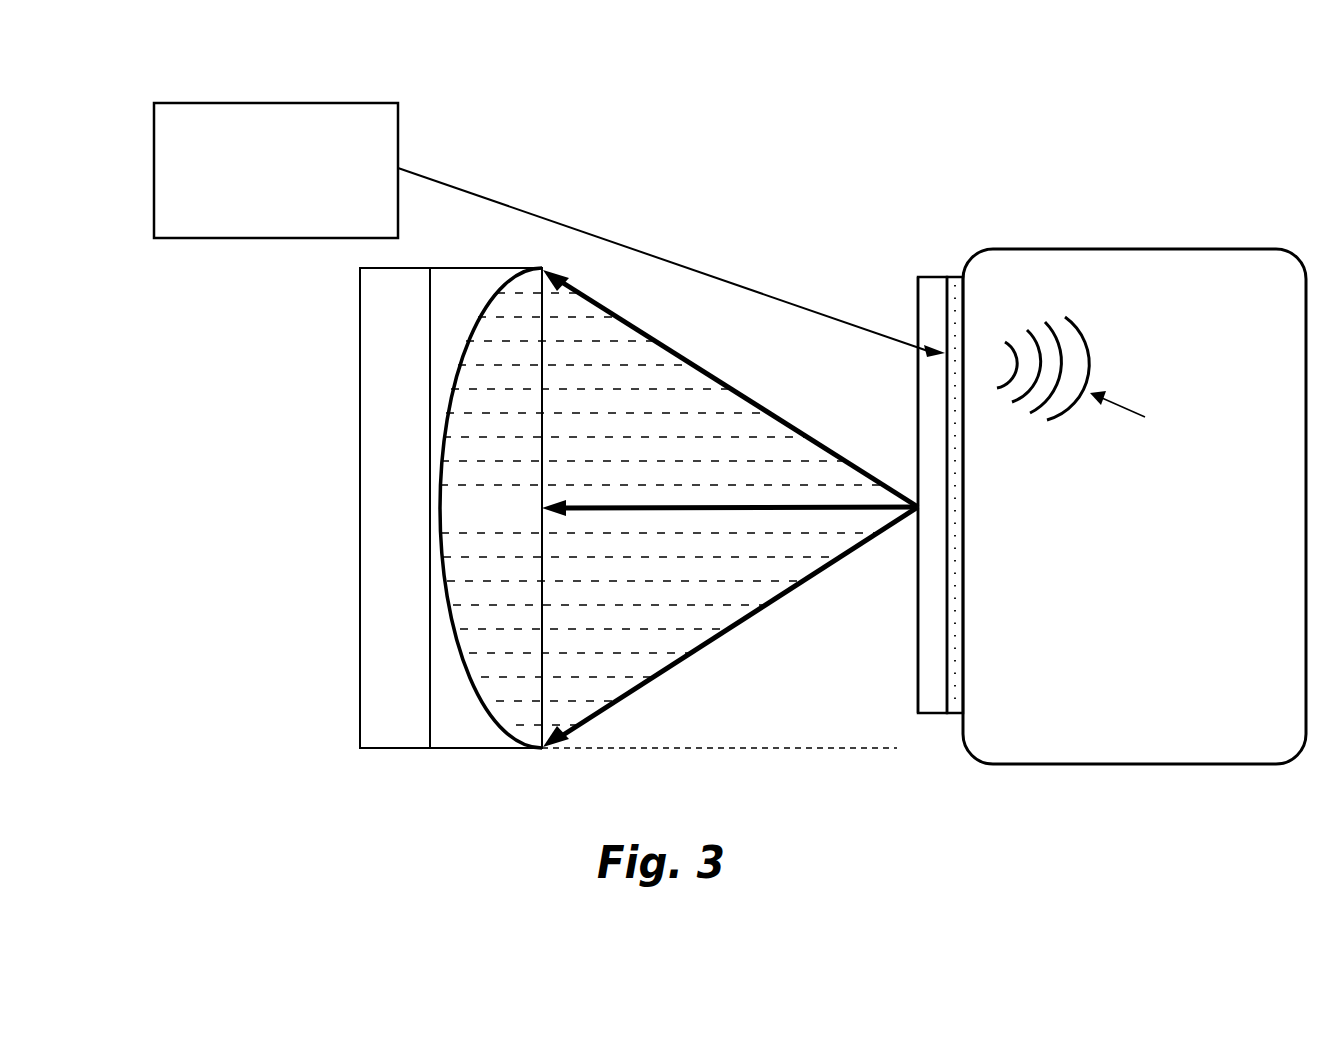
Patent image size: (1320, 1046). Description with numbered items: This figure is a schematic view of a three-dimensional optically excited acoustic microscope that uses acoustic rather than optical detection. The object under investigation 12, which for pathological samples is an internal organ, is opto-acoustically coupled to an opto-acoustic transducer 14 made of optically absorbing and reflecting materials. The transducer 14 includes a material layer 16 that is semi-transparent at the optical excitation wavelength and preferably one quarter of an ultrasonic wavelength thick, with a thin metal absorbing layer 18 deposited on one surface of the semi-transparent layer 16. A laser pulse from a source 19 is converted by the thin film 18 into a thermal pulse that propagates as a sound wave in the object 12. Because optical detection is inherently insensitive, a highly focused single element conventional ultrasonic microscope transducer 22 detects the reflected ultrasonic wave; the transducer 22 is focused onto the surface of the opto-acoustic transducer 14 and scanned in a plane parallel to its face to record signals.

The object under investigation 12 is at (1218, 249).
The transducer 14 is at (908, 266).
The material layer 16 is at (918, 413).
The absorbing layer 18 is at (950, 713).
The source 19 is at (302, 103).
The ultrasonic microscope transducer 22 is at (392, 748).